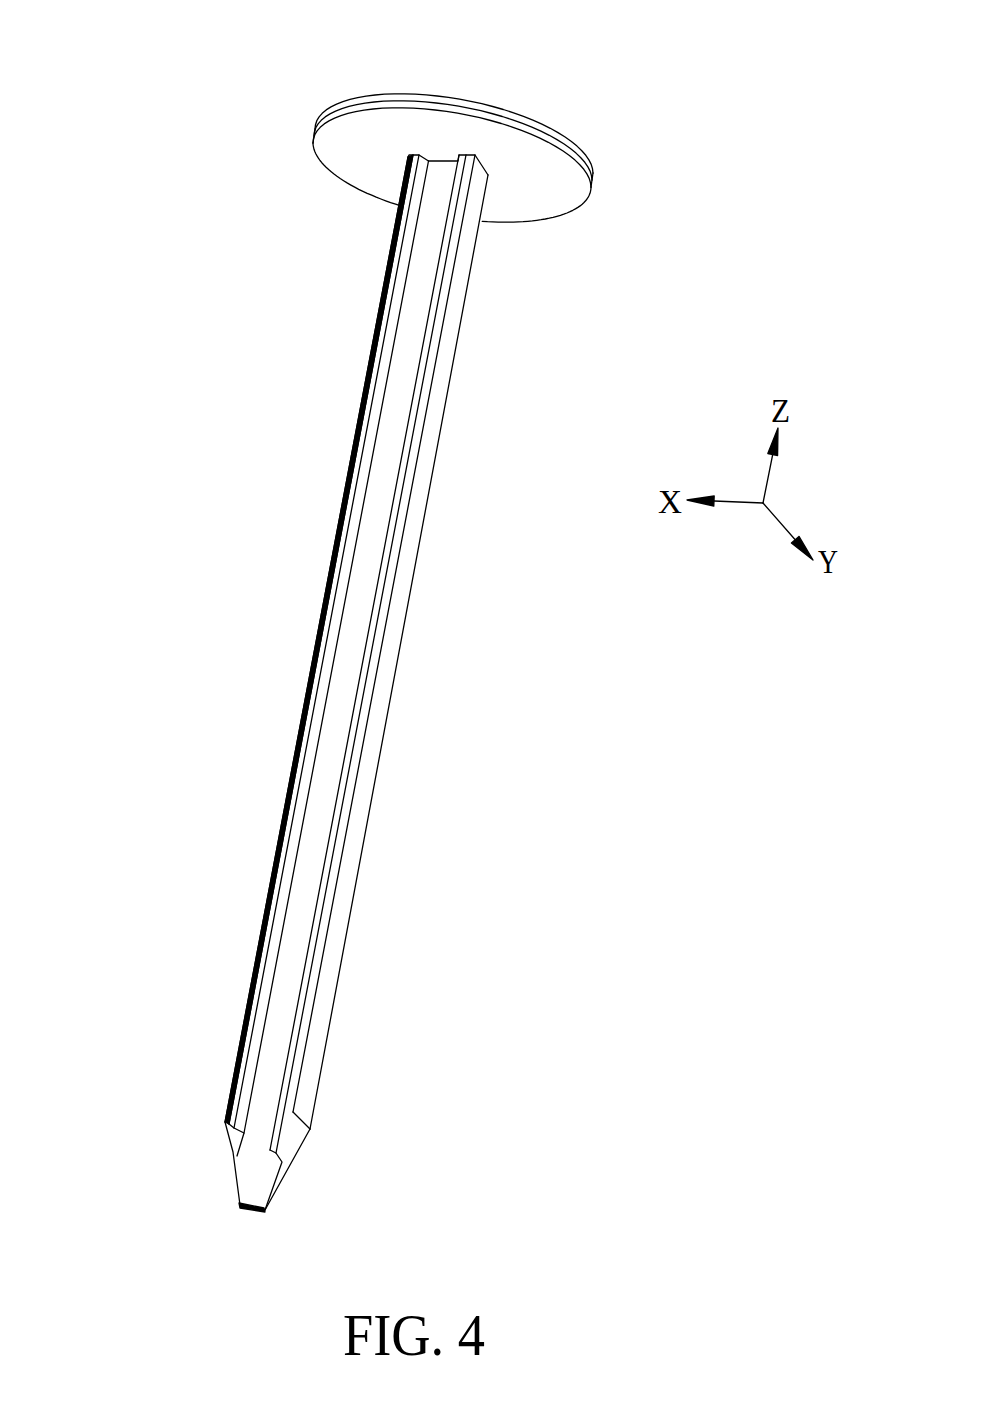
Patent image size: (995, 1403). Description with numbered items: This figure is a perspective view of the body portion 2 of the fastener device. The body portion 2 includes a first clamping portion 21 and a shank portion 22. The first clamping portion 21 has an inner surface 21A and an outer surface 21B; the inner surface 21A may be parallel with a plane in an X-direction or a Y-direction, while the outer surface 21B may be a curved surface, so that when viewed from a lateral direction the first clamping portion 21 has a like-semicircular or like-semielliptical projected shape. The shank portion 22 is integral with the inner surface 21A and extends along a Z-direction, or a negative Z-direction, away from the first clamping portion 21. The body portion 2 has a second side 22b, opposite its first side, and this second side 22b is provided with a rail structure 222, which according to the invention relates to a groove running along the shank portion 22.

The body portion 2 is at (90, 352).
The first clamping portion 21 is at (464, 151).
The inner surface 21A is at (535, 193).
The outer surface 21B is at (447, 98).
The shank portion 22 is at (385, 683).
The second side 22b is at (327, 443).
The rail structure 222 is at (387, 485).